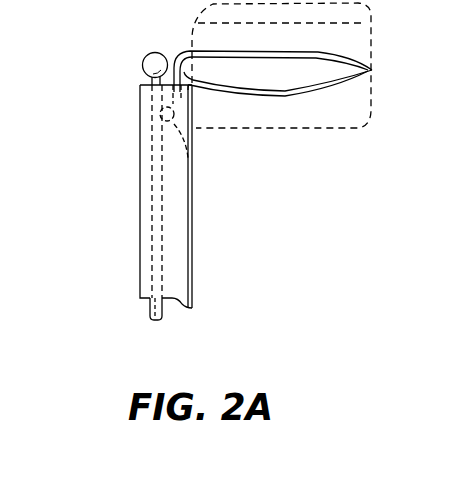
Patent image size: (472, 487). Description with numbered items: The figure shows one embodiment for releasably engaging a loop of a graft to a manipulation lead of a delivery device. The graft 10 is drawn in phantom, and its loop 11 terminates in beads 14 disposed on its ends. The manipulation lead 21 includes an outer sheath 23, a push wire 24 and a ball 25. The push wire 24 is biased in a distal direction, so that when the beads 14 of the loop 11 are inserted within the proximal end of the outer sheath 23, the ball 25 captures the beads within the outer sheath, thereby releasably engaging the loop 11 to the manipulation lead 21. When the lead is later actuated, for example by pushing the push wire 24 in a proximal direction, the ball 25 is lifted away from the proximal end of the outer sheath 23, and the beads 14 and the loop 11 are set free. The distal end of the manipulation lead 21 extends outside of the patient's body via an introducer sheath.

The graft 10 is at (269, 126).
The loop 11 is at (374, 73).
The beads 14 is at (185, 158).
The manipulation lead 21 is at (107, 211).
The outer sheath 23 is at (192, 230).
The push wire 24 is at (163, 318).
The ball 25 is at (143, 61).